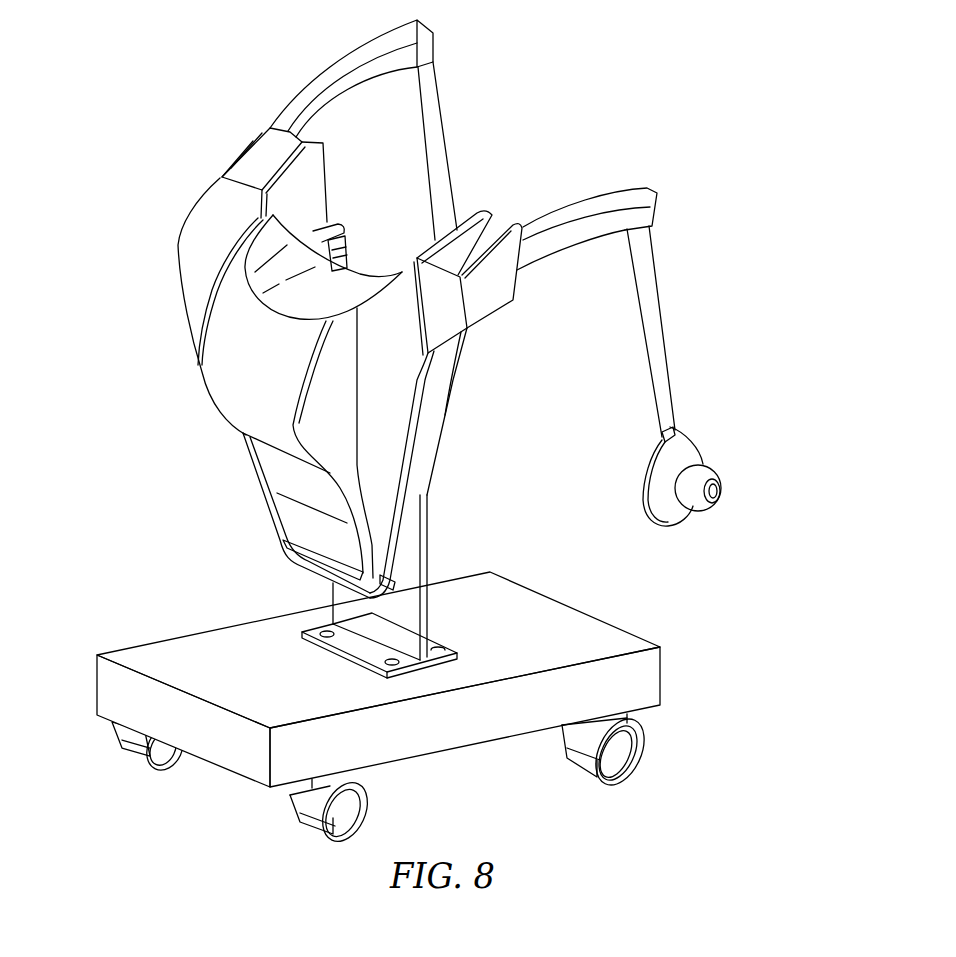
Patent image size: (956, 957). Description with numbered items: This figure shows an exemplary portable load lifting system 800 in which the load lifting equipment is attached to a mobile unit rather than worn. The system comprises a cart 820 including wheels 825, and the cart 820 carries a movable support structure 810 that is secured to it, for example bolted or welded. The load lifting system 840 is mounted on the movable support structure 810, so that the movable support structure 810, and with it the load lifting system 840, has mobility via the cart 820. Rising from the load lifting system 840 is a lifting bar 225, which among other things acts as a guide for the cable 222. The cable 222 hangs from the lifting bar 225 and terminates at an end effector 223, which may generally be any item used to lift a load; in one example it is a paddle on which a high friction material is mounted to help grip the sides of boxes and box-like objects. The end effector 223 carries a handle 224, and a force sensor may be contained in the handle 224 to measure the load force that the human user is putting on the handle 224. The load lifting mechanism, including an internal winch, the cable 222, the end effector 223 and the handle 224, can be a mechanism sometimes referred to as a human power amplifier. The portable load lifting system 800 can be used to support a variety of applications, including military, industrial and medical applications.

The portable load lifting system 800 is at (112, 528).
The load lifting system 840 is at (158, 360).
The lifting bar 225 is at (627, 170).
The cable 222 is at (660, 317).
The end effector 223 is at (653, 498).
The handle 224 is at (712, 470).
The movable support structure 810 is at (422, 552).
The cart 820 is at (703, 664).
The wheels 825 is at (624, 758).